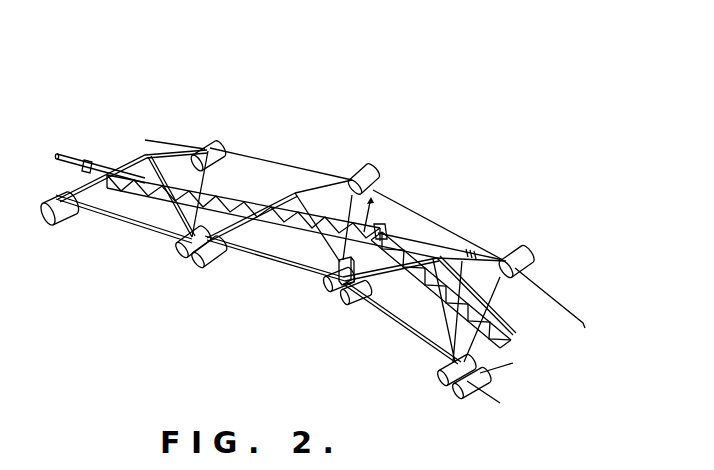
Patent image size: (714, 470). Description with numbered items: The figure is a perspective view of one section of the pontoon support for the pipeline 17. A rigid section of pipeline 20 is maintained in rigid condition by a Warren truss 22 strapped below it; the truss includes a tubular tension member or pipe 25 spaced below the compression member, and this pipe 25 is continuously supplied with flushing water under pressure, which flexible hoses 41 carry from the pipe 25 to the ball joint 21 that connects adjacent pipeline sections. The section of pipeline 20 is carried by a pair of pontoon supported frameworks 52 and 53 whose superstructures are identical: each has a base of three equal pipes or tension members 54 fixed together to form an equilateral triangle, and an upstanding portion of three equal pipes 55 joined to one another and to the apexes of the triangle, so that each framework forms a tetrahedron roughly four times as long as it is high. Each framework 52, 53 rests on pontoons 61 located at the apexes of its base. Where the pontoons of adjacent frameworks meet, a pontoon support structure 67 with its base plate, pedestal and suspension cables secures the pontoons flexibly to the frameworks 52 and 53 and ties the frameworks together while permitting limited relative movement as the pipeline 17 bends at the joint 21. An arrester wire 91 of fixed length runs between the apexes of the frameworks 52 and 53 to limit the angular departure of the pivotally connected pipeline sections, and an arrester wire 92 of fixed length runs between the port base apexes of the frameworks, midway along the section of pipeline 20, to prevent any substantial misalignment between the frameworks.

The pipeline 17 is at (100, 156).
The section of pipeline 20 is at (228, 192).
The ball joint 21 is at (85, 162).
The Warren truss 22 is at (430, 297).
The tubular tension member 25 is at (290, 224).
The flexible hose 41 is at (390, 238).
The pontoon supported framework 52 is at (132, 222).
The pontoon supported framework 53 is at (274, 264).
The tension member 54 is at (186, 234).
The pipe 55 is at (147, 155).
The pontoon 61 is at (222, 150).
The pontoon support structure 67 is at (330, 287).
The arrester wire 91 is at (466, 231).
The arrester wire 92 is at (281, 160).